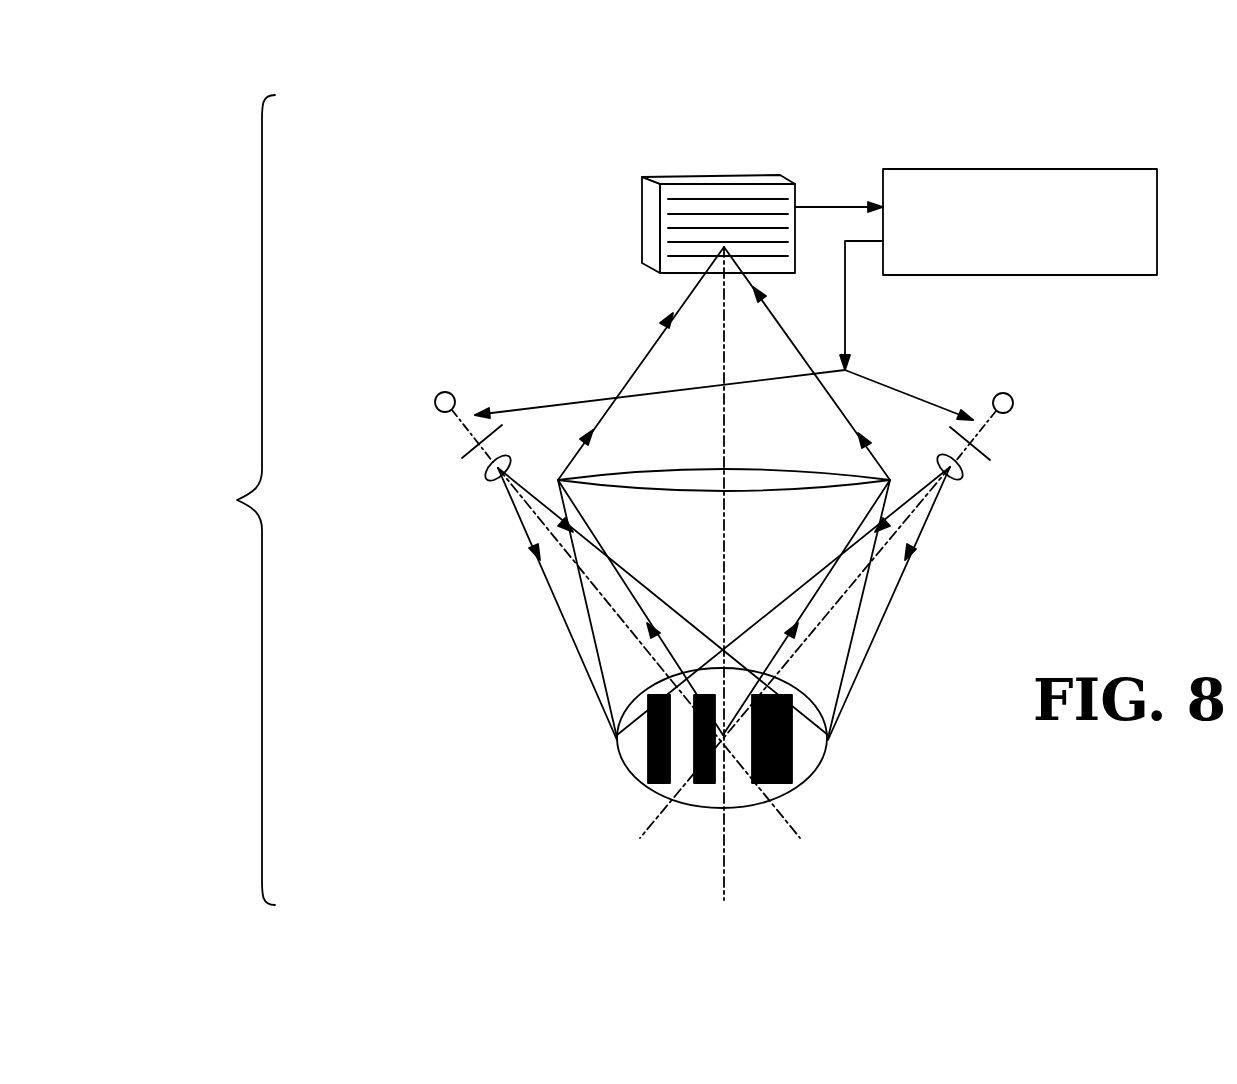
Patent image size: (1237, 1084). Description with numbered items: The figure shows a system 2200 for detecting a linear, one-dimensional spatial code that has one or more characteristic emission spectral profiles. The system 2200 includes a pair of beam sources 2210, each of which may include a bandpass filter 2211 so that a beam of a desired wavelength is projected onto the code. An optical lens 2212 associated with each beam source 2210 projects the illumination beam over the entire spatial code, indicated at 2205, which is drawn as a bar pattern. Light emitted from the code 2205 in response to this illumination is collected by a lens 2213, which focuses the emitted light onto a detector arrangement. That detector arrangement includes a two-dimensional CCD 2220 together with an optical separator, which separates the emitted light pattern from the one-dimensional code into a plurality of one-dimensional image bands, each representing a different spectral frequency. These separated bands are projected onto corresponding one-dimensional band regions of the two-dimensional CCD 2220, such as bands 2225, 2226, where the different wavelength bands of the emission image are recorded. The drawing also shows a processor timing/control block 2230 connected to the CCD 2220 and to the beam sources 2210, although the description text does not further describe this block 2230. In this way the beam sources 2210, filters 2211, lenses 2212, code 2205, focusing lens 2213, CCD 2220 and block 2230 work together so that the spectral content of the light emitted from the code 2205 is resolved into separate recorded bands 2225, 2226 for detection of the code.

The system 2200 is at (237, 500).
The spatial code 2205 is at (628, 775).
The beam source 2210 is at (440, 393).
The bandpass filter 2211 is at (462, 458).
The optical lens 2212 is at (494, 481).
The lens 2213 is at (665, 492).
The two-dimensional CCD 2220 is at (660, 176).
The band 2225 is at (753, 205).
The band 2226 is at (680, 220).
The processor timing/control 2230 is at (1058, 169).